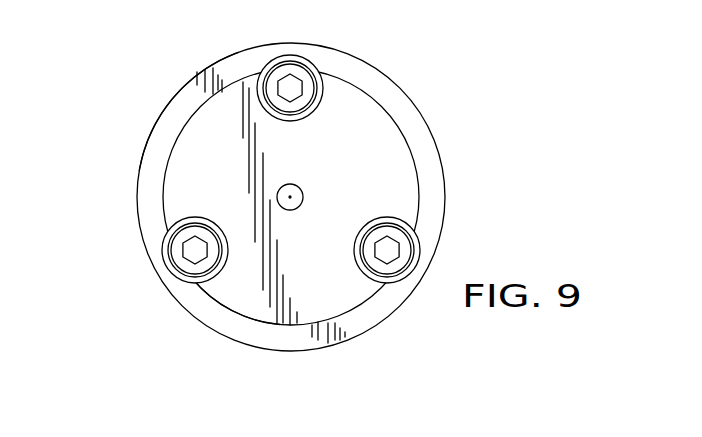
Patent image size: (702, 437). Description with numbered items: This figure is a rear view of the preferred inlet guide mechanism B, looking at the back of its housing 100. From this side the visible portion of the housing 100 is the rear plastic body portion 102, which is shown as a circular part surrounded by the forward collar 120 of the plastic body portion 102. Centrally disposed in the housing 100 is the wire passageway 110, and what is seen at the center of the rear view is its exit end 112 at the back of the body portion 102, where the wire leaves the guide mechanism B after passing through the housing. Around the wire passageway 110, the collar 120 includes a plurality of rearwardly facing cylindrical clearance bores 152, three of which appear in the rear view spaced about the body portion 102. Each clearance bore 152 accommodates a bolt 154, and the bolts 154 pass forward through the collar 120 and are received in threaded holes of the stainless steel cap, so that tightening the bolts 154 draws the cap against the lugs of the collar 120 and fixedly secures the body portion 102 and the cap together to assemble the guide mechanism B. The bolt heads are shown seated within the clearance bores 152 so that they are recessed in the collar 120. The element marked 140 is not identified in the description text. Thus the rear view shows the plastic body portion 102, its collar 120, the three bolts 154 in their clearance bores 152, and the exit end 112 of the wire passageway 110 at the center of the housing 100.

The housing 100 is at (427, 152).
The rear plastic body portion 102 is at (163, 168).
The wire passageway 110 is at (288, 183).
The exit end 112 is at (302, 192).
The forward collar 120 is at (177, 95).
The plate 140 is at (240, 315).
The rearwardly facing cylindrical clearance bores 152 is at (256, 91).
The bolts 154 is at (317, 74).
The inlet guide mechanism B is at (417, 77).